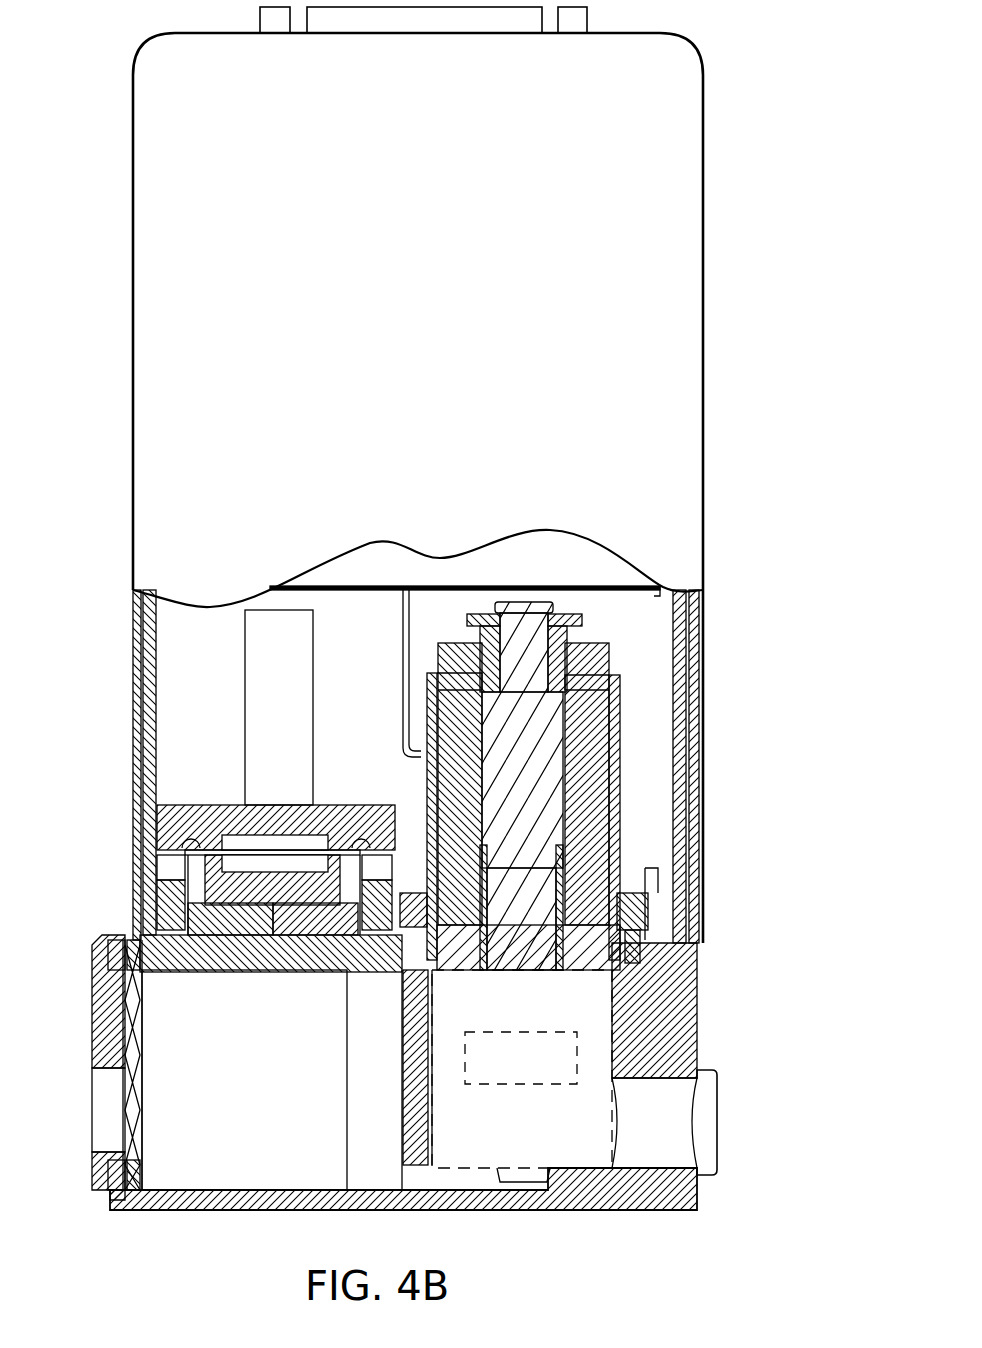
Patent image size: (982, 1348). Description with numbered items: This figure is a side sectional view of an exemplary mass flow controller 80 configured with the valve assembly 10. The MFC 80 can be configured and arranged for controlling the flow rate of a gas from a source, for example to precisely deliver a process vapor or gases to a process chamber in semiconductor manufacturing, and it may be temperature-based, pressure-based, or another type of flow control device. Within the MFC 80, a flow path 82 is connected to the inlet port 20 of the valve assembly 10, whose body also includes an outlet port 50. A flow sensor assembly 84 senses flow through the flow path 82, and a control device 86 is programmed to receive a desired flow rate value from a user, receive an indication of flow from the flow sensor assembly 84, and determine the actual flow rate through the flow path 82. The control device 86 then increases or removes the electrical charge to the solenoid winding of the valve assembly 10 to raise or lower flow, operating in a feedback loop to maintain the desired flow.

The mass flow controller 80 is at (748, 303).
The control device 86 is at (618, 595).
The valve assembly 10 is at (650, 741).
The flow sensor assembly 84 is at (205, 805).
The flow path 82 is at (280, 1205).
The inlet port 20 is at (440, 1208).
The outlet port 50 is at (690, 1100).